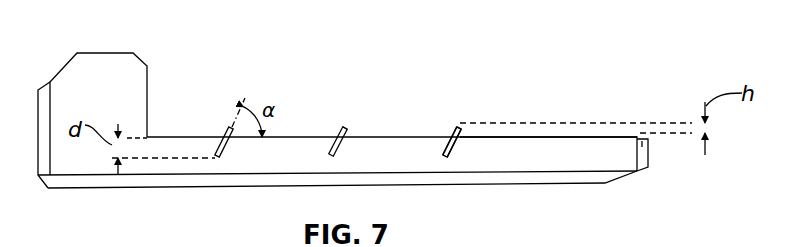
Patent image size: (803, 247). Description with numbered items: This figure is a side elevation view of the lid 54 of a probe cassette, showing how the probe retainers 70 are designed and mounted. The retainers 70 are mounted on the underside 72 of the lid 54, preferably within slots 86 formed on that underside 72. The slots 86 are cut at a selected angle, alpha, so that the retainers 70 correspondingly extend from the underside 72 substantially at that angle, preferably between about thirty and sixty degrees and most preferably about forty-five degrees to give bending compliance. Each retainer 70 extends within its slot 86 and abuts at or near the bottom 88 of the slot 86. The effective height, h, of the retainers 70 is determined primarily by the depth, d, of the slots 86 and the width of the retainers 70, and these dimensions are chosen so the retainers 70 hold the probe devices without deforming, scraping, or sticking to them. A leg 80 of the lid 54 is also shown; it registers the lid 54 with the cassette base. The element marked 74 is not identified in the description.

The leg 80 is at (102, 54).
The probe retainer 70 is at (340, 132).
The fin tip 74 is at (344, 129).
The underside 72 is at (573, 137).
The lid 54 is at (643, 140).
The bottom of slot 88 is at (441, 156).
The slot 86 is at (457, 140).